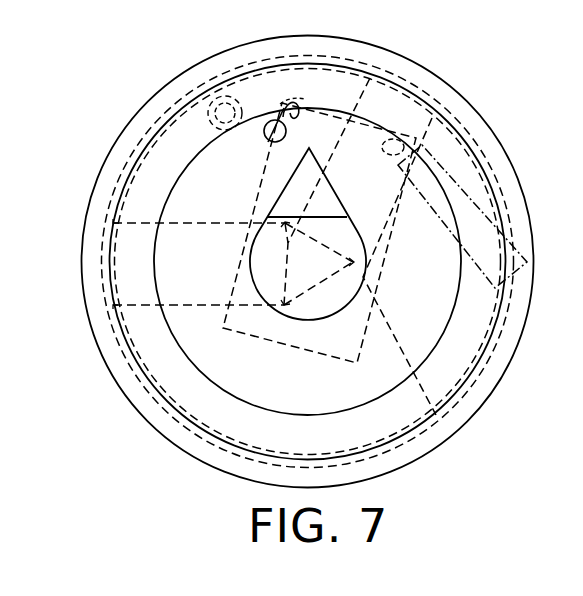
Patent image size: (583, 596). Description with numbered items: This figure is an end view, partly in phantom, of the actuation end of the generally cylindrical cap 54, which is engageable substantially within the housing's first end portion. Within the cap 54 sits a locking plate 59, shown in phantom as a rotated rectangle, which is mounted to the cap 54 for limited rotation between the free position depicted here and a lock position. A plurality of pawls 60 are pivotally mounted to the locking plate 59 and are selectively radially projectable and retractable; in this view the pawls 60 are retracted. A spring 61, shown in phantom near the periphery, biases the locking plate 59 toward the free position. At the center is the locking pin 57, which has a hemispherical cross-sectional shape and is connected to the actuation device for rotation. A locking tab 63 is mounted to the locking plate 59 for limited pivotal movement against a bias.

The cap 54 is at (143, 422).
The locking pin 57 is at (201, 103).
The locking plate 59 is at (274, 158).
The pawl 60 is at (405, 422).
The spring 61 is at (468, 199).
The locking tab 63 is at (303, 97).